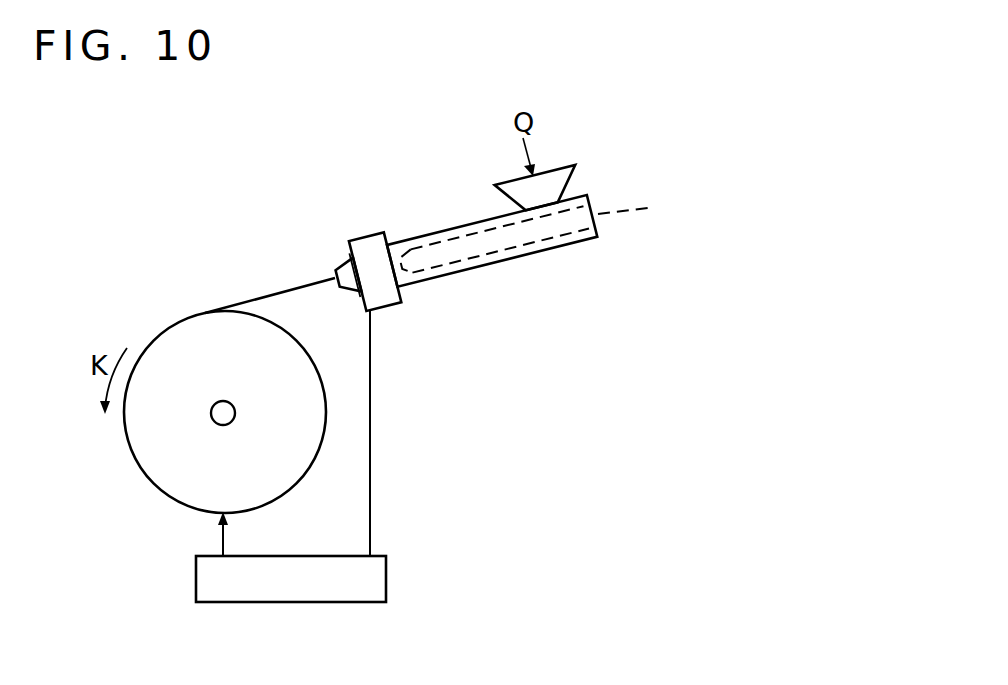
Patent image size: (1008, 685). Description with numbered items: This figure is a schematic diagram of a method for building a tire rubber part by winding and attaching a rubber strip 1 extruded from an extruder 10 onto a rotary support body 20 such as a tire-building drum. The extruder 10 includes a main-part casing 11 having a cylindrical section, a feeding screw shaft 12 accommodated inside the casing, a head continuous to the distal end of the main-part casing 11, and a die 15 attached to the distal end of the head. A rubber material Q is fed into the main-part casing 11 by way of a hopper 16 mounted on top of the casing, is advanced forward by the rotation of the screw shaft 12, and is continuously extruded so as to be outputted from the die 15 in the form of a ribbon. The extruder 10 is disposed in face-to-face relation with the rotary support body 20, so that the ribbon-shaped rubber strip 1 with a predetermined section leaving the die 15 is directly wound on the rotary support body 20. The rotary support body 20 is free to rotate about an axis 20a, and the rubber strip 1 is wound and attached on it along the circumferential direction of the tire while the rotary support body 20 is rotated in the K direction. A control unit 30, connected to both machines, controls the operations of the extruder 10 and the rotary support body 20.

The rubber strip 1 is at (262, 297).
The extruder 10 is at (435, 226).
The main-part casing 11 is at (508, 254).
The feeding screw shaft 12 is at (642, 202).
The die 15 is at (341, 268).
The hopper 16 is at (564, 180).
The rotary support body 20 is at (156, 492).
The axis 20a is at (211, 413).
The control unit 30 is at (386, 572).